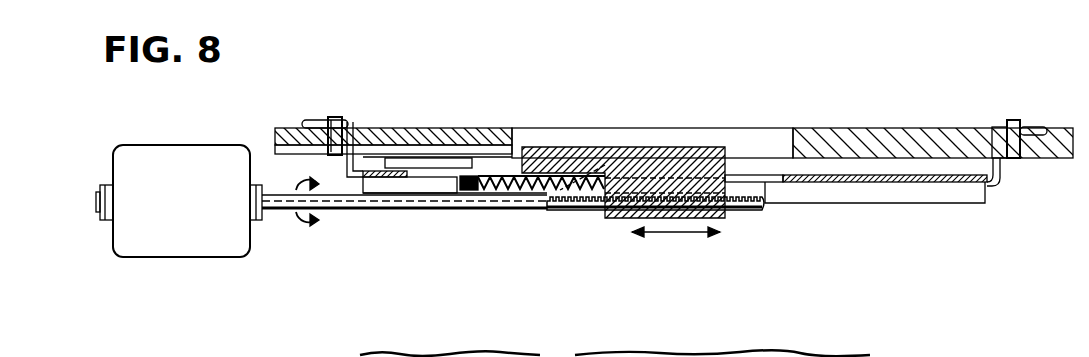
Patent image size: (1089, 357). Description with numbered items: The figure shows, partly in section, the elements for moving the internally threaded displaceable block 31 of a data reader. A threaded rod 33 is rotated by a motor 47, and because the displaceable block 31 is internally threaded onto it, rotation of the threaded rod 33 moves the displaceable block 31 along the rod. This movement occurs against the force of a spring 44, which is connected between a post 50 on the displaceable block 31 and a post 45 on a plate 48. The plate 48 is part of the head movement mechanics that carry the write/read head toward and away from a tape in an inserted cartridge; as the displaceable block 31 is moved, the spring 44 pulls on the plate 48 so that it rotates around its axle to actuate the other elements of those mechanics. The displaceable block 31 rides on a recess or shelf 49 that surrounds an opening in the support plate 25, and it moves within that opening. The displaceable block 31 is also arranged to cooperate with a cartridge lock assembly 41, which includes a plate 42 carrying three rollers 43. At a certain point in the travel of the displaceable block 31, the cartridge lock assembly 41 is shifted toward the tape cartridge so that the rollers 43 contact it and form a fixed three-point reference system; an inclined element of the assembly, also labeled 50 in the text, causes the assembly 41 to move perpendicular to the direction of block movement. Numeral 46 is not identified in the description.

The support plate 25 is at (911, 139).
The displaceable block 31 is at (573, 150).
The threaded rod 33 is at (349, 210).
The cartridge lock assembly 41 is at (1008, 167).
The plate 42 is at (920, 183).
The rollers 43 is at (319, 122).
The spring 44 is at (494, 190).
The post 45 is at (462, 186).
The bore 46 is at (606, 172).
The motor 47 is at (153, 157).
The plate 48 is at (422, 158).
The recess or shelf 49 is at (274, 144).
The post 50 is at (580, 196).